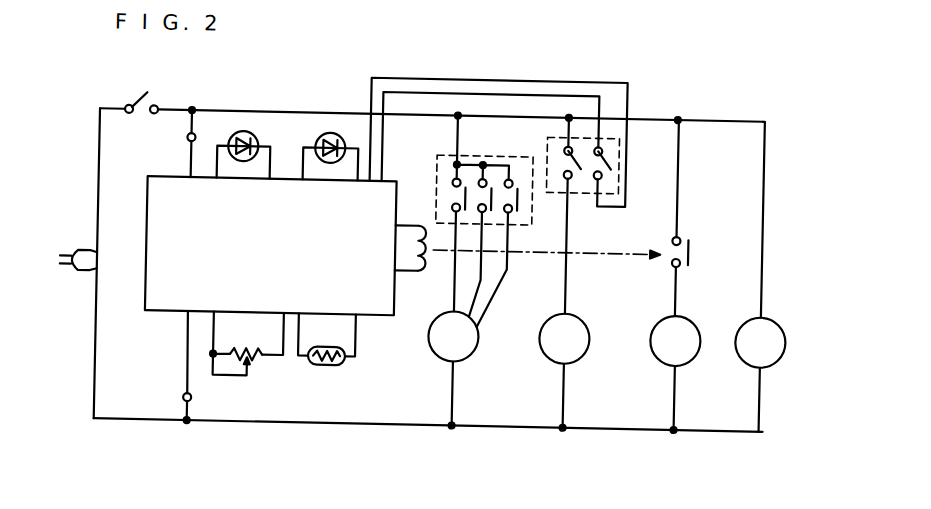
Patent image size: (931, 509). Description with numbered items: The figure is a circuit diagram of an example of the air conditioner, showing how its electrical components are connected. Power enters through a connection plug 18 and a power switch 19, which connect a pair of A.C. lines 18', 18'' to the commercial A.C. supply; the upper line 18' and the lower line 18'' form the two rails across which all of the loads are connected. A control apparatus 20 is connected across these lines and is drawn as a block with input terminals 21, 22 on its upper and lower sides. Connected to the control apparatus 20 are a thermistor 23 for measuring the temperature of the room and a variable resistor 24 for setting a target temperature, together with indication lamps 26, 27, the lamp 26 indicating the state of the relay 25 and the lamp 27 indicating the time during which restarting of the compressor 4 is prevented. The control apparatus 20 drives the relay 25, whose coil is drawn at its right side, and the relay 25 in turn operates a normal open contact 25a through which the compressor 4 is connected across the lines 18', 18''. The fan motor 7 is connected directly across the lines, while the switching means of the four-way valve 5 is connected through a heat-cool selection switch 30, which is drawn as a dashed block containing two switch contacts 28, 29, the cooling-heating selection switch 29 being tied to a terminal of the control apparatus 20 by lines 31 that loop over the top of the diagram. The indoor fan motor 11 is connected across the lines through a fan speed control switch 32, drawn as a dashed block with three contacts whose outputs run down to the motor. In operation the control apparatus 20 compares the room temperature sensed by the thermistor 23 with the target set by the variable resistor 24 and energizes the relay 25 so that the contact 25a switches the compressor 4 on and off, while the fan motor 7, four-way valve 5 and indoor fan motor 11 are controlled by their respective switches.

The connection plug 18 is at (75, 287).
The A.C. line 18' is at (432, 85).
The A.C. line 18'' is at (428, 453).
The power switch 19 is at (152, 108).
The control apparatus 20 is at (170, 189).
The input terminal 21 is at (185, 142).
The input terminal 22 is at (186, 402).
The thermistor 23 is at (336, 367).
The variable resistor 24 is at (252, 364).
The relay 25 is at (421, 274).
The normal open contact 25a is at (691, 248).
The indication lamp 26 is at (229, 140).
The indication lamp 27 is at (313, 142).
The switch 28 is at (565, 178).
The cooling-heating selection switch 29 is at (601, 173).
The heat-cool selection switch 30 is at (556, 136).
The connecting lines 31 is at (381, 182).
The fan speed control switch 32 is at (437, 155).
The indoor fan motor 11 is at (440, 351).
The four-way valve 5 is at (548, 351).
The compressor 4 is at (658, 353).
The fan motor 7 is at (745, 353).